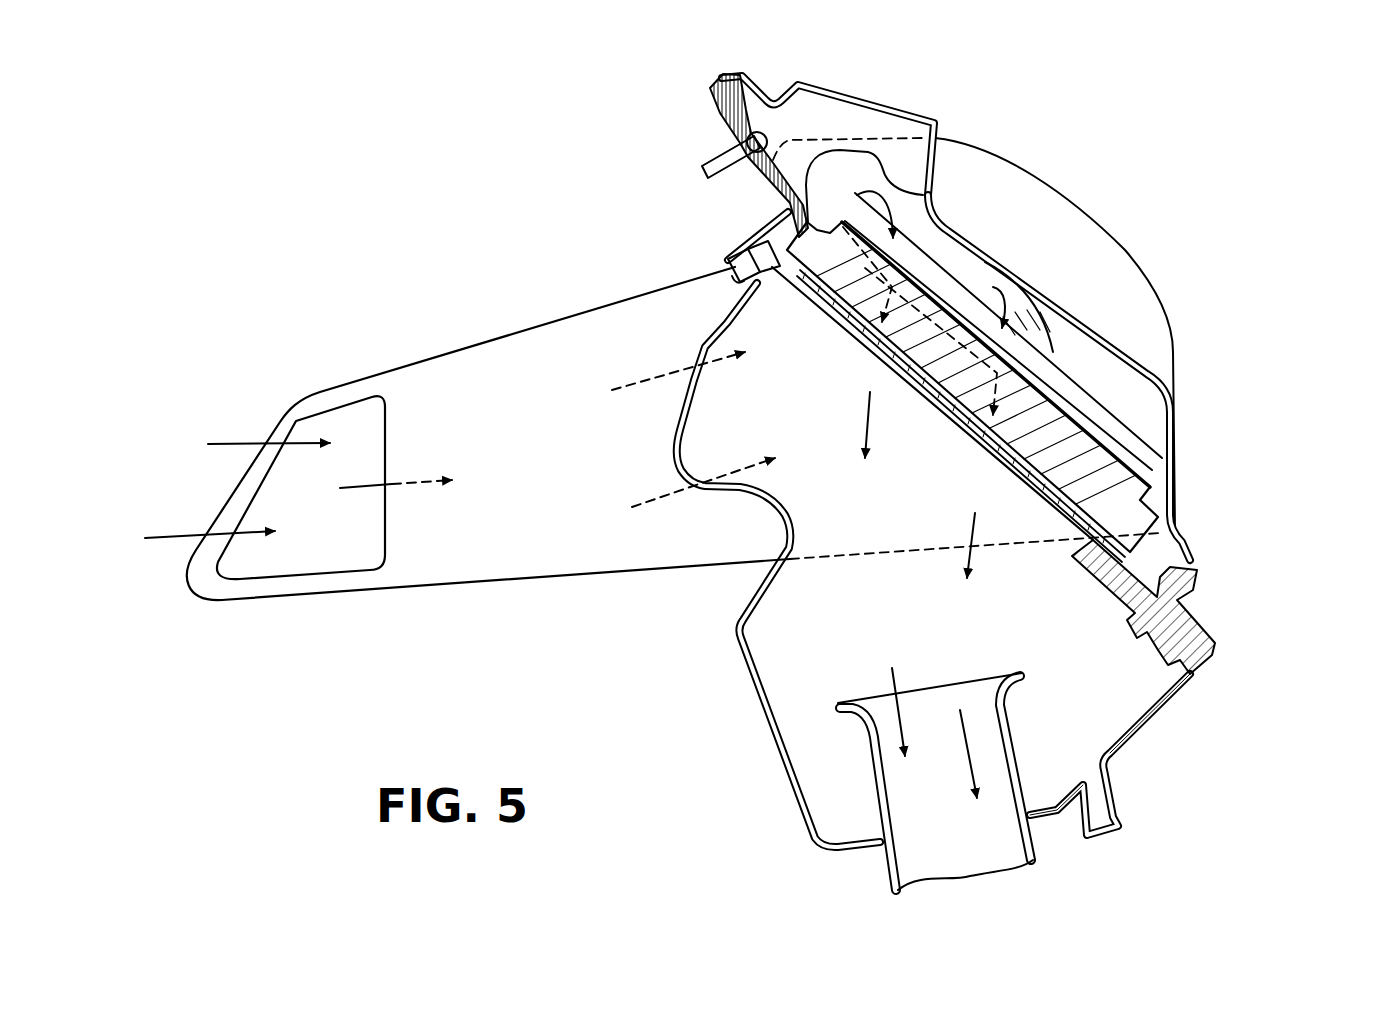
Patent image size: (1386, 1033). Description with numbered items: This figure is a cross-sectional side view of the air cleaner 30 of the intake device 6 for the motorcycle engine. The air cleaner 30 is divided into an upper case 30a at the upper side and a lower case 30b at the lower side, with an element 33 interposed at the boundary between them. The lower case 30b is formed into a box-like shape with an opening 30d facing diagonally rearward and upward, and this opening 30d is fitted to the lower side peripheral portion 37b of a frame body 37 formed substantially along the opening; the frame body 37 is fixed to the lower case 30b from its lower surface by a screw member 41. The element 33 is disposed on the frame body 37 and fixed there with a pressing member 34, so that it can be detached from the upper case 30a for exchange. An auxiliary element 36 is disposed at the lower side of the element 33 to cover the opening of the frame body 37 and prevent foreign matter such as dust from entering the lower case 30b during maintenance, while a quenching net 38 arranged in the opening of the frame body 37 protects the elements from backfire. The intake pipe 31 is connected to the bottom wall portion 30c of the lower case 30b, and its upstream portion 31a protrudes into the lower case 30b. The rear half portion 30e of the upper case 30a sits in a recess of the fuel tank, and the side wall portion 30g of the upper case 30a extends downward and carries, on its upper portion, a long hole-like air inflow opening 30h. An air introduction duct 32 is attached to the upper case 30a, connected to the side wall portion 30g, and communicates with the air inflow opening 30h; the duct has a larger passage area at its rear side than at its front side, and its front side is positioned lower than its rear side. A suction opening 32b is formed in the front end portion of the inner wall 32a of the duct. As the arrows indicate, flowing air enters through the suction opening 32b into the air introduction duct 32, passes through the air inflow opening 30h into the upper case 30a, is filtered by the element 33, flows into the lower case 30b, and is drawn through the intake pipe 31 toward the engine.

The intake device 6 is at (1107, 173).
The air cleaner 30 is at (1027, 476).
The upper case 30a is at (1180, 508).
The lower case 30b is at (1175, 693).
The bottom wall portion 30c is at (1053, 822).
The opening of the lower case 30d is at (893, 127).
The rear half portion 30e is at (1075, 325).
The side wall portion 30g is at (905, 110).
The air inflow opening 30h is at (880, 165).
The intake pipe 31 is at (955, 800).
The upstream portion 31a is at (1013, 743).
The air introduction duct 32 is at (673, 449).
The inner wall 32a is at (485, 565).
The suction opening 32b is at (322, 568).
The element 33 is at (1103, 423).
The pressing member 34 is at (1090, 395).
The auxiliary element 36 is at (955, 403).
The frame body 37 is at (1172, 607).
The lower side peripheral portion 37b is at (1155, 657).
The quenching net 38 is at (935, 372).
The screw member 41 is at (740, 282).